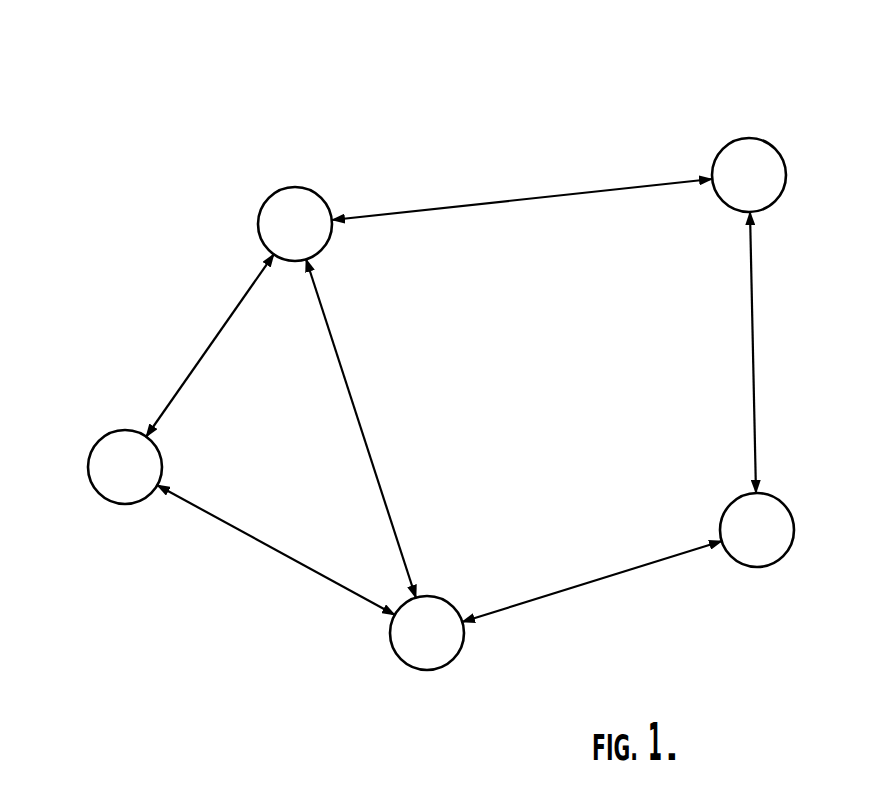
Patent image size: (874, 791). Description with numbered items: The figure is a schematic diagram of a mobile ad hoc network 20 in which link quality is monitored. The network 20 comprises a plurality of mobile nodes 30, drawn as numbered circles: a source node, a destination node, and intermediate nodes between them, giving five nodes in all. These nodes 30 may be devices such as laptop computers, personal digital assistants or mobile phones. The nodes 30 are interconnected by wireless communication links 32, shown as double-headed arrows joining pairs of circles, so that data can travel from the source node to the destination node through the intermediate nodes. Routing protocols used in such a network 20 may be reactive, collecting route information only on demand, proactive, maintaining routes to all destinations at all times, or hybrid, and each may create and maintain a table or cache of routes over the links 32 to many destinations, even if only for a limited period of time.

The mobile ad hoc network 20 is at (573, 112).
The mobile nodes 30 is at (286, 186).
The wireless communication links 32 is at (212, 337).